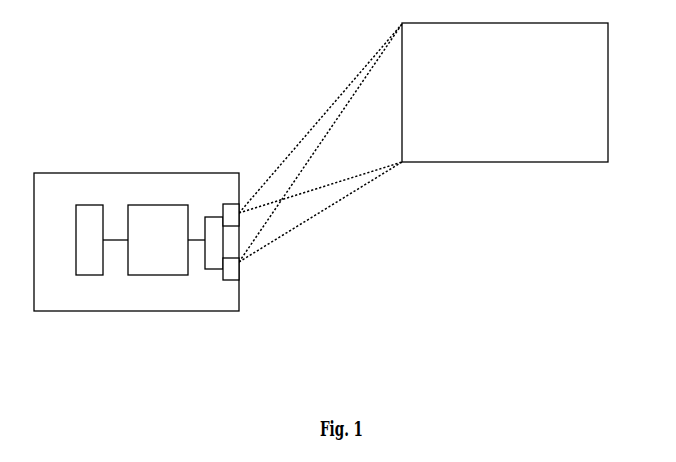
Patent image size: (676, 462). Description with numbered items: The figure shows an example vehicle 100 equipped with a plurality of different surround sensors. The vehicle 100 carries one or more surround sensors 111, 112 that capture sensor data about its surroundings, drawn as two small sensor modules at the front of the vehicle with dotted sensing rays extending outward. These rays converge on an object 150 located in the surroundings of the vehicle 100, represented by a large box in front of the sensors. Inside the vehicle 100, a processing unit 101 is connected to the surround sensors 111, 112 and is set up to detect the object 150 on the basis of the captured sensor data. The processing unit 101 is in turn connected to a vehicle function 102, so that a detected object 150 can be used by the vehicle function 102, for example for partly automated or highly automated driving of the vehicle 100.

The vehicle 100 is at (102, 173).
The processing unit 101 is at (168, 205).
The vehicle function 102 is at (88, 275).
The surround sensor 111 is at (230, 204).
The surround sensor 112 is at (232, 265).
The object 150 is at (395, 40).